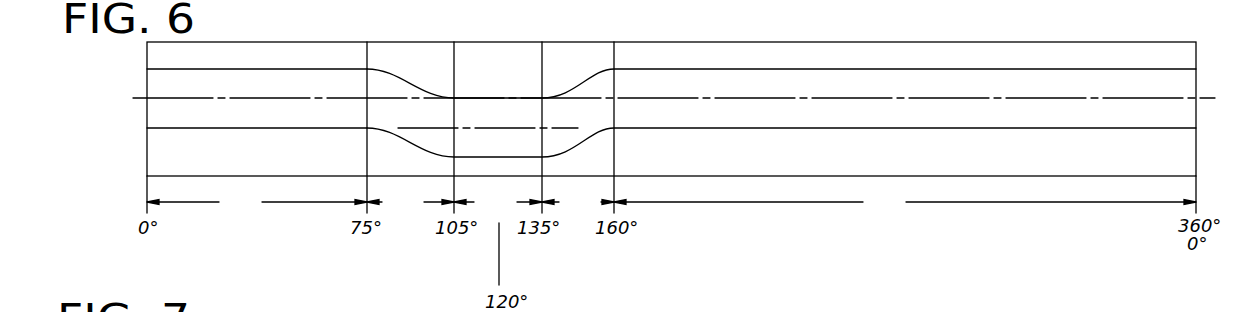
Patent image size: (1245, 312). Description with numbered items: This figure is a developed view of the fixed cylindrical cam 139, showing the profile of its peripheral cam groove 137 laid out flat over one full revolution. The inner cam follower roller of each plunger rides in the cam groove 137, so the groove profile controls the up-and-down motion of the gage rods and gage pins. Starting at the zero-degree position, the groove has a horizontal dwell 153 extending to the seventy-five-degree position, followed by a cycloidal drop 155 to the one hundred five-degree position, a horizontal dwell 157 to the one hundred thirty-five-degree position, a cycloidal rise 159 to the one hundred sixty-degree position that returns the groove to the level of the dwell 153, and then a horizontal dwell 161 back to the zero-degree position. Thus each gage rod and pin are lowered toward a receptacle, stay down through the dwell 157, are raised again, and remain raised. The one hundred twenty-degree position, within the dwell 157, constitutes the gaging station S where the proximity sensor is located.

The peripheral cam groove 137 is at (640, 67).
The fixed cylindrical cam 139 is at (820, 42).
The horizontal dwell 153 is at (257, 202).
The cycloidal drop 155 is at (410, 202).
The horizontal dwell 157 is at (498, 202).
The cycloidal rise 159 is at (578, 202).
The horizontal dwell 161 is at (905, 202).
The gaging station S is at (497, 258).